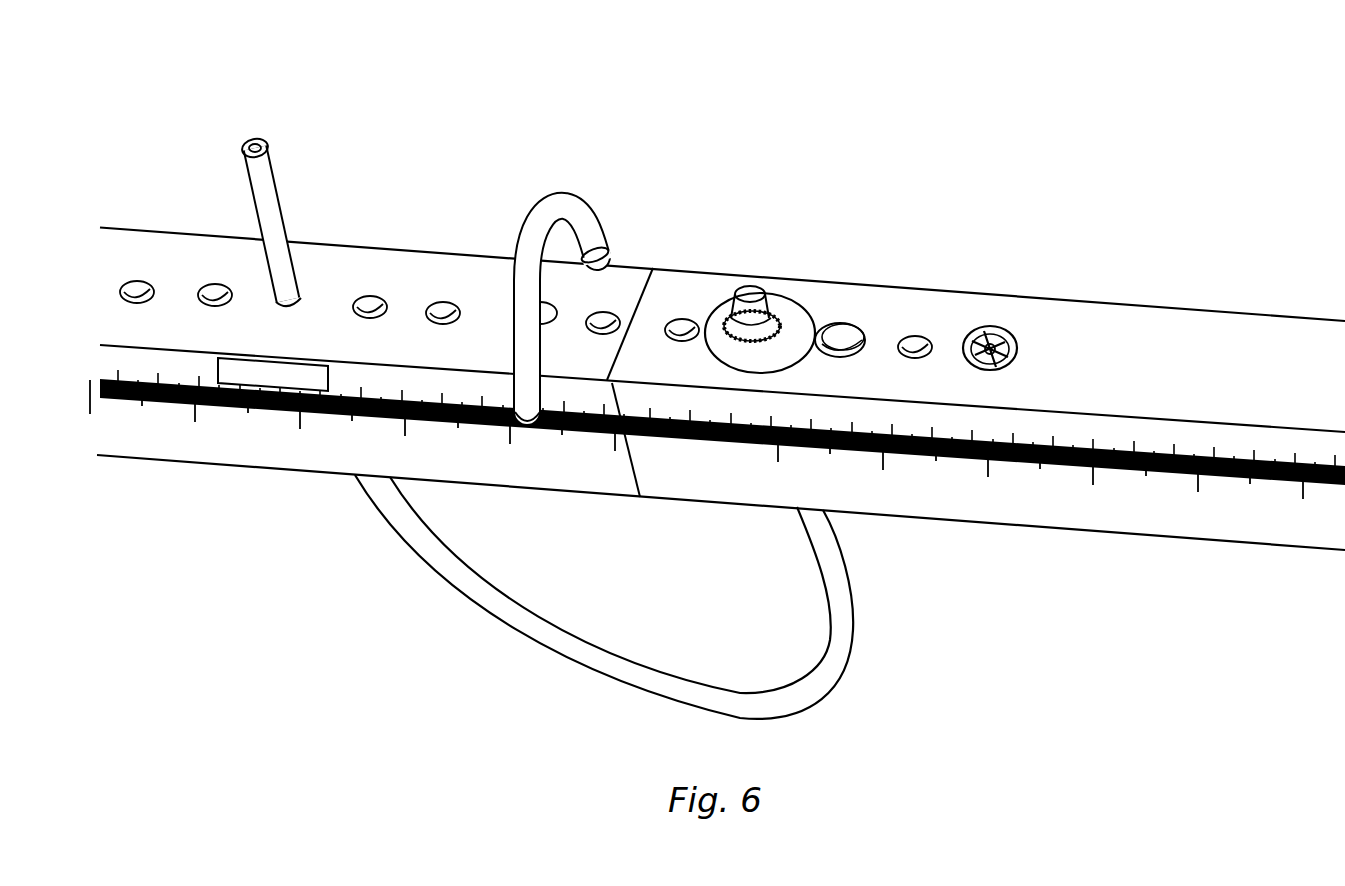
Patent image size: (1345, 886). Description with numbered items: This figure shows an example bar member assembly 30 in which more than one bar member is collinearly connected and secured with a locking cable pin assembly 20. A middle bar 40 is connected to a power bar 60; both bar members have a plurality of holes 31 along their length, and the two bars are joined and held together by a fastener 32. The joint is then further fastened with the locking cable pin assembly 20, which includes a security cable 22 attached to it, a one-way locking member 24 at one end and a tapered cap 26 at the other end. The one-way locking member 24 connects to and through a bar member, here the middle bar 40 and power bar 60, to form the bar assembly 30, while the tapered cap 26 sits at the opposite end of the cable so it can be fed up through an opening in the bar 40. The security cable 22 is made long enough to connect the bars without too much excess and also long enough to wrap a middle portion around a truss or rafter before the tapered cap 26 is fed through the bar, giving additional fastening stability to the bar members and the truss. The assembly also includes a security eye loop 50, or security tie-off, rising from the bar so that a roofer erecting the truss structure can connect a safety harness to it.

The locking cable pin assembly 20 is at (845, 592).
The security cable 22 is at (845, 645).
The one-way locking member 24 is at (758, 290).
The tapered cap 26 is at (268, 190).
The bar member assembly 30 is at (1153, 80).
The holes 31 is at (850, 318).
The fastener 32 is at (1018, 346).
The middle bar 40 is at (388, 270).
The security eye loop 50 is at (578, 222).
The power bar 60 is at (997, 312).